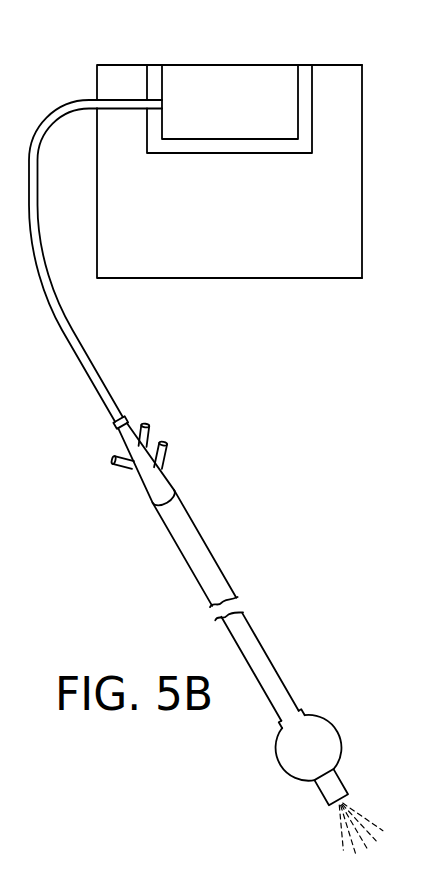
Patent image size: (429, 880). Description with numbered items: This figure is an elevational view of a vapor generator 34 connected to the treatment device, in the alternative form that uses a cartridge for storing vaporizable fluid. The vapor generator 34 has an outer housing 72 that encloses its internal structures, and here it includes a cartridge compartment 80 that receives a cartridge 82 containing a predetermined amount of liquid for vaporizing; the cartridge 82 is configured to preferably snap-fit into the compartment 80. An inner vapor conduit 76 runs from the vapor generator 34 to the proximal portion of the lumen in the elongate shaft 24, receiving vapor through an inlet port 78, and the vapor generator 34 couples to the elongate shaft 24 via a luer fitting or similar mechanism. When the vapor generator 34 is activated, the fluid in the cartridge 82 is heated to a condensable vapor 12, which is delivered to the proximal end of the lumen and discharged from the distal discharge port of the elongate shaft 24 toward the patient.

The condensable vapor 12 is at (340, 845).
The elongate shaft 24 is at (215, 563).
The vapor generator 34 is at (363, 180).
The outer housing 72 is at (315, 283).
The inner vapor conduit 76 is at (118, 98).
The inlet port 78 is at (147, 108).
The cartridge compartment 80 is at (254, 155).
The cartridge 82 is at (254, 77).